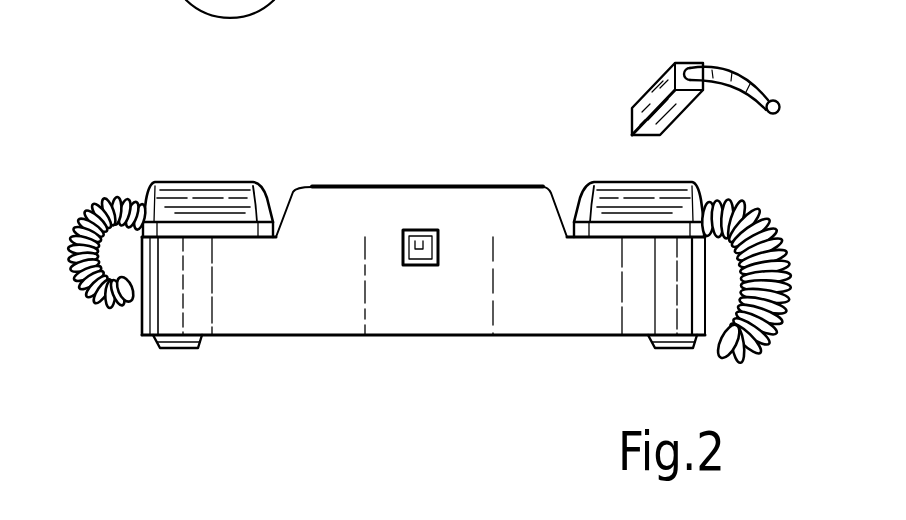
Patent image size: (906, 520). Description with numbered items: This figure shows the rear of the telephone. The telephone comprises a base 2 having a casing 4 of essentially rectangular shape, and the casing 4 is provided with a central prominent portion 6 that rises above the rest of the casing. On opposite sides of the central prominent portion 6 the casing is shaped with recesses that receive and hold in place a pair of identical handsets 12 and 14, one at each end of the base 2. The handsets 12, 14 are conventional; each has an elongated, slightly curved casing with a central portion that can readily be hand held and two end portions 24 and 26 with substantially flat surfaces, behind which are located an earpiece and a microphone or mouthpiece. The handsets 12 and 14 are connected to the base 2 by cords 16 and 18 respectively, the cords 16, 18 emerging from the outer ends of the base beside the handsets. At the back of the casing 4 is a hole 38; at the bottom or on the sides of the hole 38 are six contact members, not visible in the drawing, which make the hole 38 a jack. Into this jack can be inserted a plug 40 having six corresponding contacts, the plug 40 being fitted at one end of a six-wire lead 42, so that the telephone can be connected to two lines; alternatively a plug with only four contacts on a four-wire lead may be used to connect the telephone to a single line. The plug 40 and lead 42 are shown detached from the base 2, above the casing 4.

The base 2 is at (516, 350).
The casing 4 is at (343, 310).
The central prominent portion 6 is at (489, 210).
The handset 12 is at (627, 150).
The handset 14 is at (208, 150).
The cord 16 is at (786, 342).
The cord 18 is at (97, 206).
The end portion 24 is at (217, 205).
The end portion 26 is at (597, 210).
The hole 38 is at (423, 230).
The plug 40 is at (648, 97).
The six-wire lead 42 is at (738, 75).